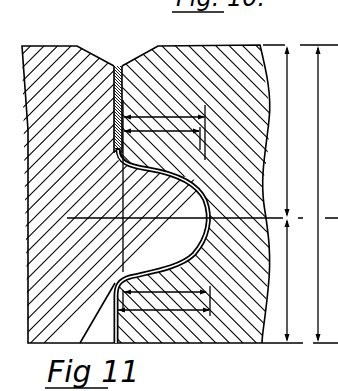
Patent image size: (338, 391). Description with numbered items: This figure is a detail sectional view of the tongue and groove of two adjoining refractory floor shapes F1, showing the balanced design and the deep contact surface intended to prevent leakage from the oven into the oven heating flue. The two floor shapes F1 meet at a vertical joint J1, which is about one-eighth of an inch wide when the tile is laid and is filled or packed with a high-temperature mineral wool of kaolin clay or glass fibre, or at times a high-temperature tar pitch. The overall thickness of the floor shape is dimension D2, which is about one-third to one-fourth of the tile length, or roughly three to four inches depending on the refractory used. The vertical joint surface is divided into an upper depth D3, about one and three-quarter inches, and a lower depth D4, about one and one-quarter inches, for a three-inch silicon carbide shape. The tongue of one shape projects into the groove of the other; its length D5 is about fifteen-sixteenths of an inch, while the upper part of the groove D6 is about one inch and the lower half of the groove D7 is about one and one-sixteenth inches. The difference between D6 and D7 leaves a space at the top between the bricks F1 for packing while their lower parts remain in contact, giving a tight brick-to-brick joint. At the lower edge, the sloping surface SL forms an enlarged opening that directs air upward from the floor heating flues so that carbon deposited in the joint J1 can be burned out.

The floor shape F1 is at (169, 192).
The joint J1 is at (123, 65).
The sloping surface SL is at (91, 322).
The thickness dimension D2 is at (312, 194).
The upper joint depth dimension D3 is at (281, 131).
The lower joint depth dimension D4 is at (283, 280).
The tongue length dimension D5 is at (162, 138).
The upper groove depth dimension D6 is at (166, 208).
The lower groove depth dimension D7 is at (164, 303).